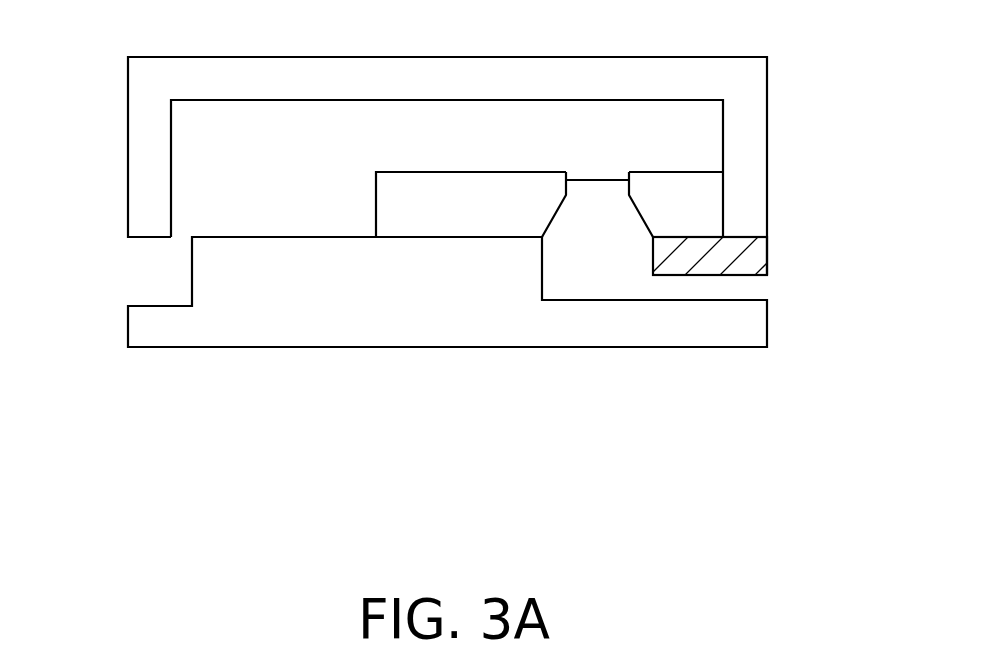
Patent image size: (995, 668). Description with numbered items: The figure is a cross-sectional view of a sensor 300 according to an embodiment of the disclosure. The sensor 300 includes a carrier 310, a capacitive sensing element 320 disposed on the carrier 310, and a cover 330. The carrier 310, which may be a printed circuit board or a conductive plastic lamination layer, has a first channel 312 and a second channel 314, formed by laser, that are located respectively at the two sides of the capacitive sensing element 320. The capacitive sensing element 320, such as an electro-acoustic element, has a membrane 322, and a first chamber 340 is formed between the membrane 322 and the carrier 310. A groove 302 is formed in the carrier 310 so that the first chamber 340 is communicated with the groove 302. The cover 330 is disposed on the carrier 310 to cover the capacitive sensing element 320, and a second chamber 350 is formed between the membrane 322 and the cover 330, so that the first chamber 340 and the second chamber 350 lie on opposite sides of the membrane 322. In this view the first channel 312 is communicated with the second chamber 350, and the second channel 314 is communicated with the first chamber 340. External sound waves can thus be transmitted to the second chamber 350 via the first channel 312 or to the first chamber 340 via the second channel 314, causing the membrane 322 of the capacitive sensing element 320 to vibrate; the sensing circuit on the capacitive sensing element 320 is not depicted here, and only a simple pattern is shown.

The sensor 300 is at (865, 455).
The groove 302 is at (558, 267).
The carrier 310 is at (755, 335).
The first channel 312 is at (152, 270).
The second channel 314 is at (764, 289).
The capacitive sensing element 320 is at (420, 185).
The membrane 322 is at (584, 176).
The cover 330 is at (745, 88).
The first chamber 340 is at (598, 240).
The second chamber 350 is at (283, 150).